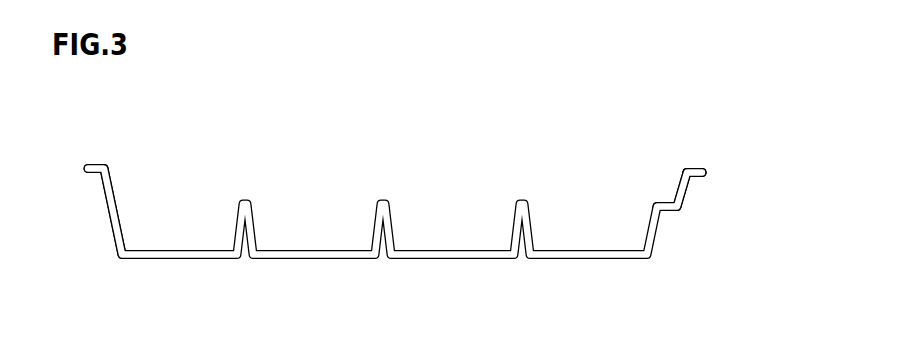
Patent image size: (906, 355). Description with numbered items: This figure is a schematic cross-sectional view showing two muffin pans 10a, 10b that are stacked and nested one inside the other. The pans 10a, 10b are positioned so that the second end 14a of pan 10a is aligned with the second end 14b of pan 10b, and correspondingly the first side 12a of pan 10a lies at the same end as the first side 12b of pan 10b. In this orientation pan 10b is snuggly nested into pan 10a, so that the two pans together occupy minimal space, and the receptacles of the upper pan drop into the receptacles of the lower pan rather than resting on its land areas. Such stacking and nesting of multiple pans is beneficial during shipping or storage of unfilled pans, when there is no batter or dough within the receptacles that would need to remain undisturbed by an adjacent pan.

The pan 10a is at (670, 211).
The pan 10b is at (697, 171).
The first side 12a is at (698, 177).
The first side 12b is at (701, 170).
The second end 14a is at (100, 173).
The second end 14b is at (95, 164).